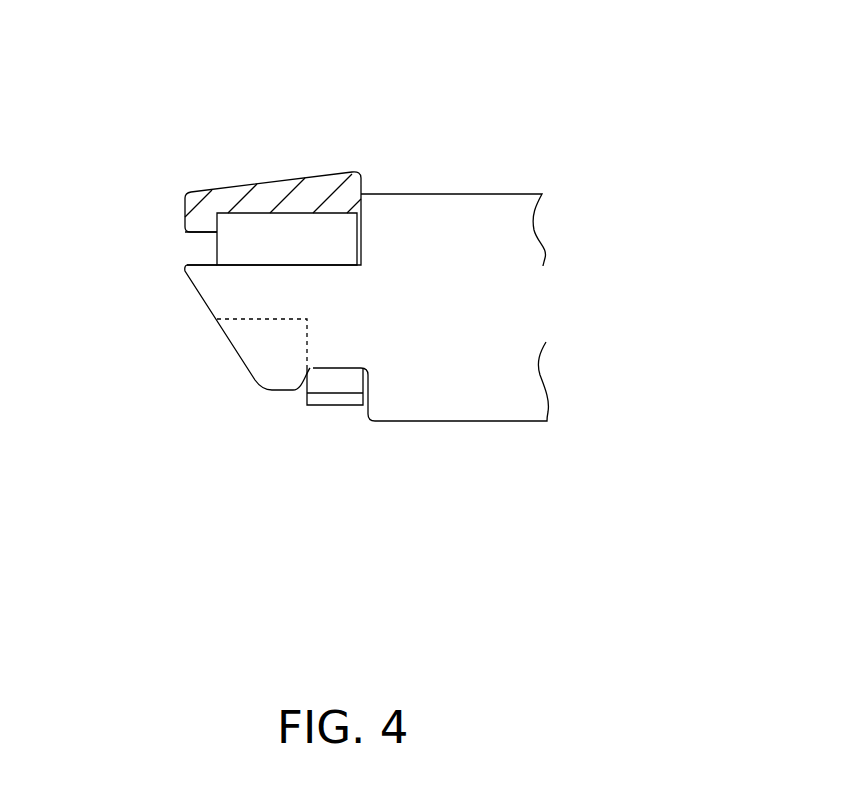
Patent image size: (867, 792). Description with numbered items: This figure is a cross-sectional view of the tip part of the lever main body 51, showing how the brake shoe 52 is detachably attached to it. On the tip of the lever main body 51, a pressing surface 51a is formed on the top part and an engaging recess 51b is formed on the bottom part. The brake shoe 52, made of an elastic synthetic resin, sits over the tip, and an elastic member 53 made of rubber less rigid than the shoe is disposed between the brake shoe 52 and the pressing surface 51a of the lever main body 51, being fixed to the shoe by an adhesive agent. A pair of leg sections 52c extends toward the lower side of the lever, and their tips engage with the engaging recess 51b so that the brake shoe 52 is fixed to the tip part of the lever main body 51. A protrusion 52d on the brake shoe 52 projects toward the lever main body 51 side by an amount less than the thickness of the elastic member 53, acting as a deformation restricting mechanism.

The lever main body 51 is at (505, 423).
The pressing surface 51a is at (302, 263).
The engaging recess 51b is at (333, 370).
The brake shoe 52 is at (234, 177).
The leg sections 52c is at (350, 390).
The protrusion 52d is at (203, 224).
The elastic member 53 is at (238, 248).